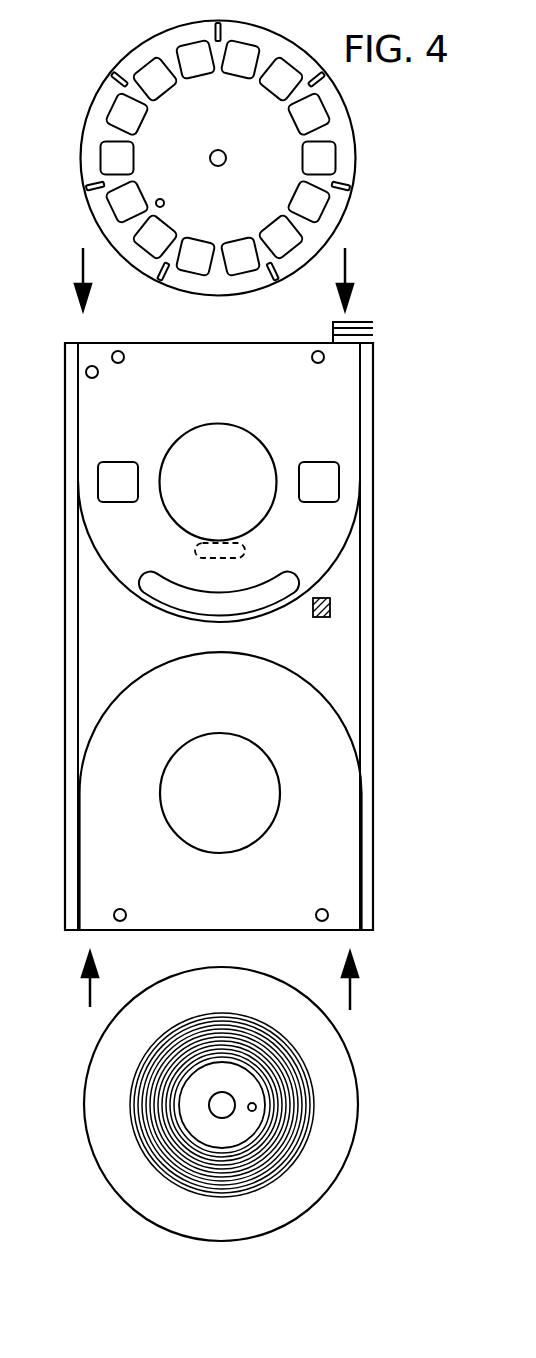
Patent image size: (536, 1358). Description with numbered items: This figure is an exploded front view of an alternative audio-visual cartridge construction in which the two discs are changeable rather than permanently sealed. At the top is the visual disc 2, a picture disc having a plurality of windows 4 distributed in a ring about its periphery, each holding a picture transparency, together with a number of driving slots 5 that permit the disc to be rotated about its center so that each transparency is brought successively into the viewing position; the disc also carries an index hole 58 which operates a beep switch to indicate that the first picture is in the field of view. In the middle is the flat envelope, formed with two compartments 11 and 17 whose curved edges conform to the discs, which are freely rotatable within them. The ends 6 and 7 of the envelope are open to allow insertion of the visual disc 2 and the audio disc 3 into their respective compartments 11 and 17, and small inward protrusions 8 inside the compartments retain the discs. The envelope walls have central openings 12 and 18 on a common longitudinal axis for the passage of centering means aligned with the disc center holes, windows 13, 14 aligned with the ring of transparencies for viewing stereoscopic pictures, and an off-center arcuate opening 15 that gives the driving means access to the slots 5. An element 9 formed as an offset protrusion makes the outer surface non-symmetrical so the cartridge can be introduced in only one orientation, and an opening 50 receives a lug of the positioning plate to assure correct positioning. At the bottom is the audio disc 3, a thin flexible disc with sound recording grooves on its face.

The visual disc 2 is at (88, 118).
The audio disc 3 is at (100, 1067).
The windows 4 is at (167, 88).
The driving slots 5 is at (345, 170).
The hole 58 is at (164, 201).
The end of envelope 6 is at (167, 343).
The end of envelope 7 is at (245, 932).
The inward protrusions 8 is at (121, 362).
The element 9 is at (330, 600).
The compartment 11 is at (345, 410).
The opening 12 is at (212, 428).
The window 13 is at (110, 485).
The window 14 is at (330, 488).
The arcuate opening 15 is at (157, 588).
The compartment 17 is at (337, 755).
The opening 18 is at (225, 843).
The opening 50 is at (86, 369).